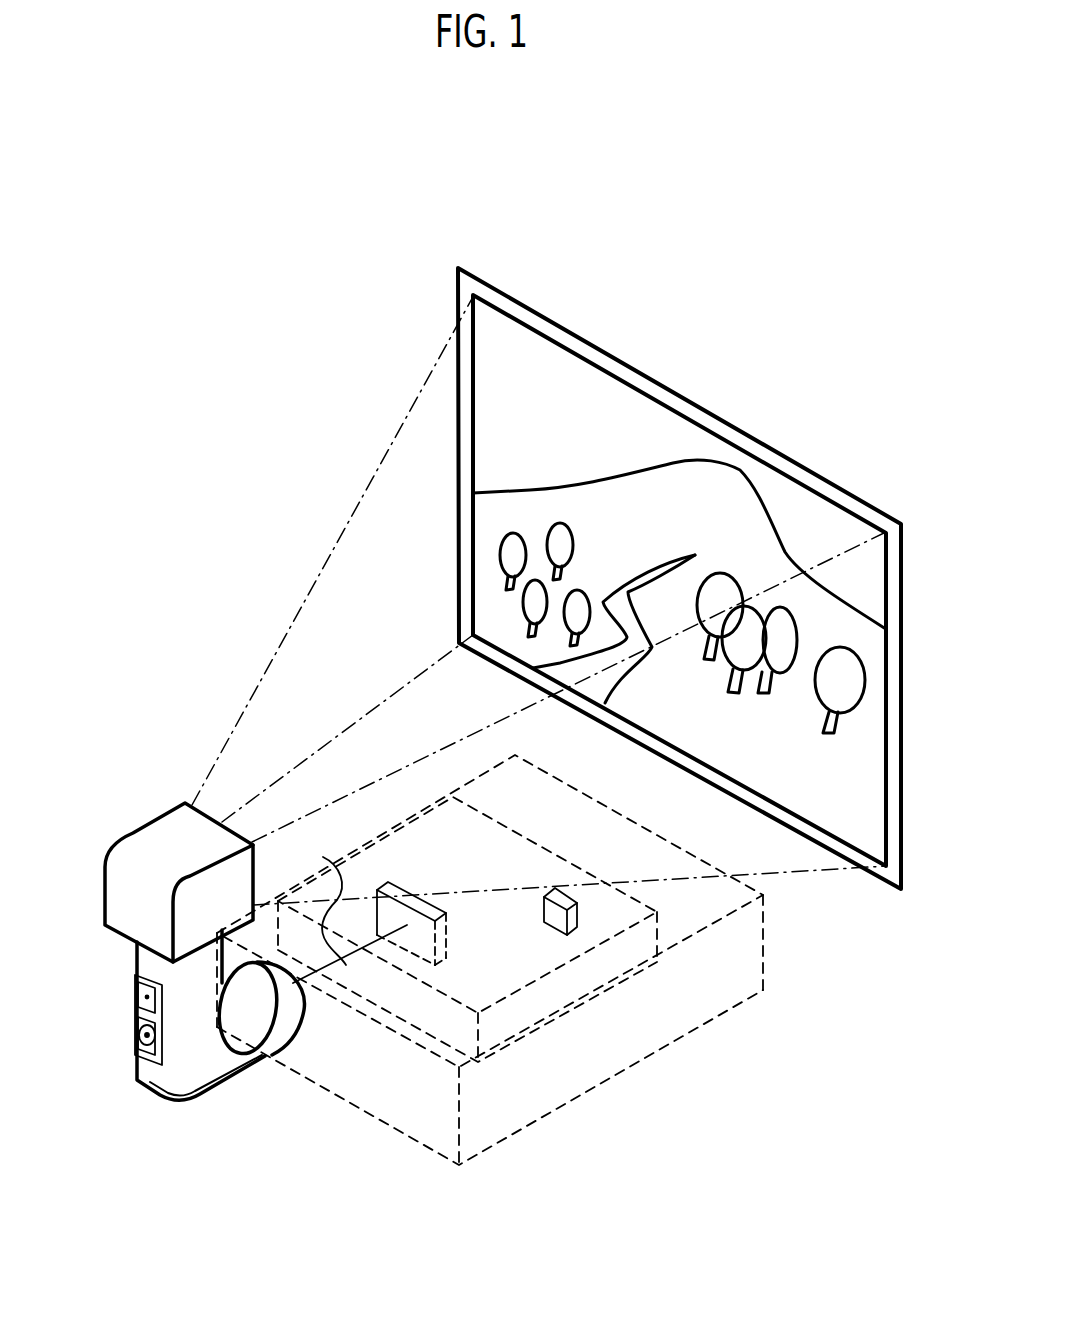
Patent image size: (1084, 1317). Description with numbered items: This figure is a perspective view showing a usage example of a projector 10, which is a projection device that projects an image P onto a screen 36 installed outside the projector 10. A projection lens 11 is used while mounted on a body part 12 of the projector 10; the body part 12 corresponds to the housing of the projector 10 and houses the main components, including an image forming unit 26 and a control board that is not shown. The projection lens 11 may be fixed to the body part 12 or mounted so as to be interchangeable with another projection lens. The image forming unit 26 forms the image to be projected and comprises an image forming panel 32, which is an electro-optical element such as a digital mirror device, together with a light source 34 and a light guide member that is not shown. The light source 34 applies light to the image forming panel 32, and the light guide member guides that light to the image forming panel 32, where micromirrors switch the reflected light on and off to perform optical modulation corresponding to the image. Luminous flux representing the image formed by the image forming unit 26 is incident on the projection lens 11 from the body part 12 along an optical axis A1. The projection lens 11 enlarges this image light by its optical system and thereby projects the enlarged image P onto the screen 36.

The projector 10 is at (607, 1118).
The projection lens 11 is at (118, 816).
The body part 12 is at (676, 1047).
The image forming unit 26 is at (497, 817).
The image forming panel 32 is at (458, 908).
The light source 34 is at (548, 910).
The screen 36 is at (643, 374).
The image P is at (798, 497).
The optical axis A1 is at (325, 894).